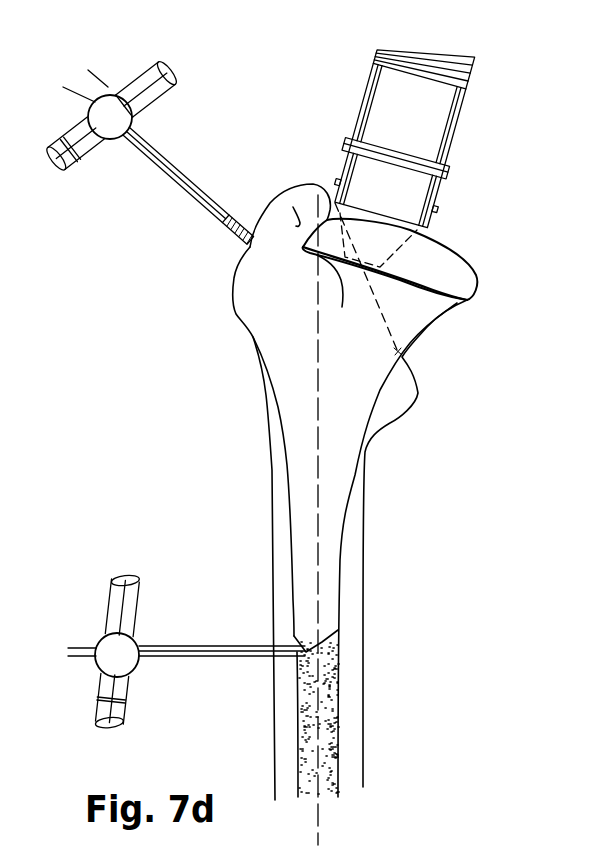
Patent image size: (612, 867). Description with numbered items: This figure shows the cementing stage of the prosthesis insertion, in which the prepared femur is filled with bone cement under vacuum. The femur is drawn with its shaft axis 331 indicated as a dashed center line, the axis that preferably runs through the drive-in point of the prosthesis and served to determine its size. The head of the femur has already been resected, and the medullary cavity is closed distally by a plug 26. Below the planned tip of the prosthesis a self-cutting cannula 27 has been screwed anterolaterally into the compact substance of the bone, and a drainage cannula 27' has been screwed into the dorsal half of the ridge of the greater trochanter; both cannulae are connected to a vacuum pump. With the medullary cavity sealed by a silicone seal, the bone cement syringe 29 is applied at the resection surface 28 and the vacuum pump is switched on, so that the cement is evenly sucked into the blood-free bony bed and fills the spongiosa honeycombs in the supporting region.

The plug 26 is at (333, 708).
The self-cutting cannula 27 is at (186, 651).
The drainage cannula 27' is at (153, 151).
The resection plane 28 is at (443, 252).
The bone cement syringe 29 is at (446, 140).
The shaft axis 331 is at (318, 804).